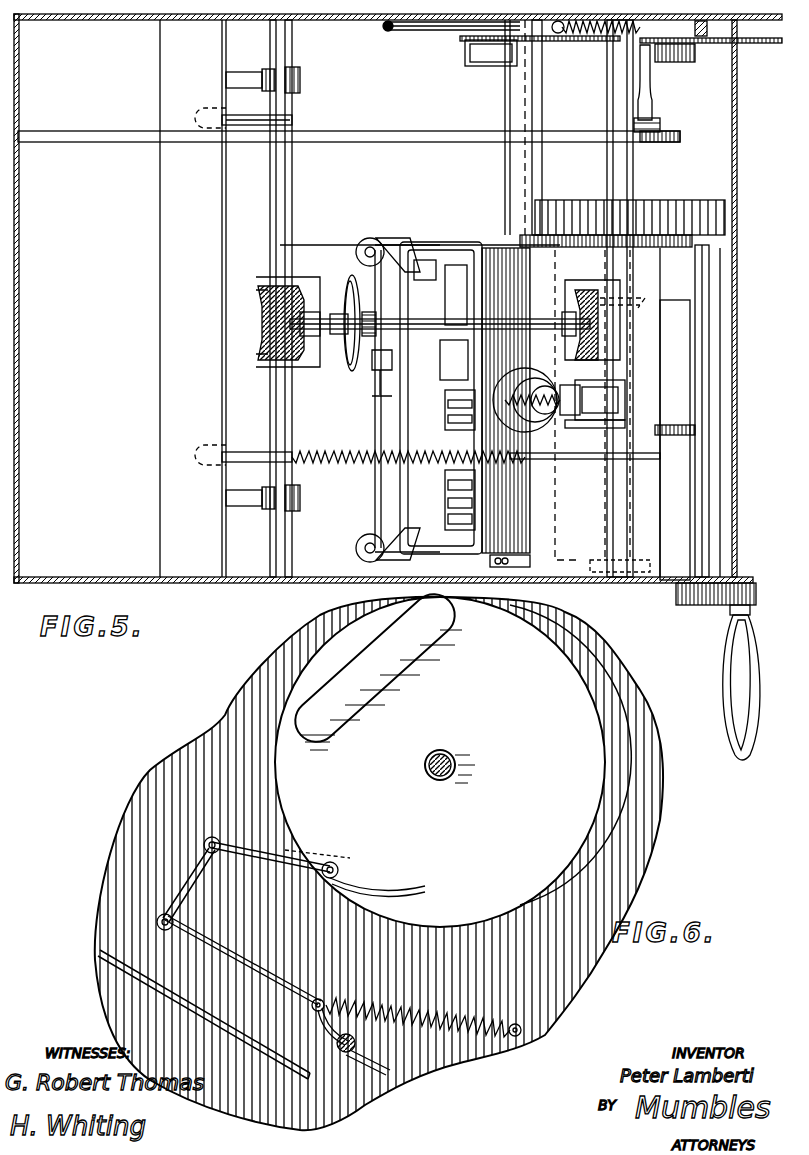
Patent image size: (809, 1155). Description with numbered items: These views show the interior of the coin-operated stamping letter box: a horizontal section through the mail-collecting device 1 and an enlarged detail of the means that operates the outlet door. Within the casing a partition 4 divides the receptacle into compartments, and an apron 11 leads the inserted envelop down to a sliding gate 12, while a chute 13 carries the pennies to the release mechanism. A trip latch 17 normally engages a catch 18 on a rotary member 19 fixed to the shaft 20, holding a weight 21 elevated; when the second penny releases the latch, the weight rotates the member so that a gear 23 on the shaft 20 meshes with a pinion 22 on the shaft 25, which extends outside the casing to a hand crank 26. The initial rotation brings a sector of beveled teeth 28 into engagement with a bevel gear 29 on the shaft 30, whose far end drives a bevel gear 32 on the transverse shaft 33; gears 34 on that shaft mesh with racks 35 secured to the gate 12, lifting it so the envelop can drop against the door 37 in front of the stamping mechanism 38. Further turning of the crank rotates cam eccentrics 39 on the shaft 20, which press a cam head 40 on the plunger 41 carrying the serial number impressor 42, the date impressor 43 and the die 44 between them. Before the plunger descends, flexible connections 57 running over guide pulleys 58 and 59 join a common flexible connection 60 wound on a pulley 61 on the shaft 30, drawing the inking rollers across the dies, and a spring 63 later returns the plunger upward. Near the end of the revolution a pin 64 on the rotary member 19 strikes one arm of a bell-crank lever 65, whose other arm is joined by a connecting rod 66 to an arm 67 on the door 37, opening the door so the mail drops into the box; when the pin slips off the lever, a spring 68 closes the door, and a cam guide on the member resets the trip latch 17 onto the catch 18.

In FIG. 5, the mail-collecting device 1 is at (766, 40).
In FIG. 5, the partition 4 is at (736, 246).
In FIG. 5, the apron 11 is at (161, 298).
In FIG. 5, the gate 12 is at (160, 340).
In FIG. 5, the chute 13 is at (378, 131).
In FIG. 5, the trip latch 17 is at (652, 110).
In FIG. 5, the catch 18 is at (640, 58).
In FIG. 6, the catch 18 is at (340, 872).
In FIG. 5, the rotary member 19 is at (752, 44).
In FIG. 6, the rotary member 19 is at (580, 792).
In FIG. 5, the shaft 20 is at (615, 160).
In FIG. 6, the shaft 20 is at (452, 758).
In FIG. 5, the weight 21 is at (488, 55).
In FIG. 6, the weight 21 is at (375, 667).
In FIG. 5, the pinion 22 is at (728, 208).
In FIG. 5, the gear 23 is at (652, 200).
In FIG. 5, the shaft 25 is at (710, 412).
In FIG. 5, the hand crank 26 is at (732, 616).
In FIG. 5, the sector of beveled teeth 28 is at (618, 290).
In FIG. 5, the bevel gear 29 is at (600, 336).
In FIG. 5, the shaft 30 is at (532, 320).
In FIG. 5, the bevel gear 32 is at (292, 290).
In FIG. 5, the transverse shaft 33 is at (270, 343).
In FIG. 5, the gear 34 is at (300, 76).
In FIG. 5, the rack 35 is at (244, 76).
In FIG. 5, the door 37 is at (520, 118).
In FIG. 6, the door 37 is at (372, 1082).
In FIG. 5, the stamping mechanism 38 is at (510, 510).
In FIG. 5, the cam eccentric 39 is at (668, 425).
In FIG. 5, the cam head 40 is at (590, 428).
In FIG. 5, the plunger 41 is at (565, 420).
In FIG. 5, the serial number impressor 42 is at (446, 292).
In FIG. 5, the date impressor 43 is at (445, 498).
In FIG. 5, the die 44 is at (459, 460).
In FIG. 5, the flexible connection 57 is at (420, 240).
In FIG. 5, the guide pulley 58 is at (378, 242).
In FIG. 5, the guide pulley 59 is at (380, 350).
In FIG. 5, the common flexible connection 60 is at (372, 372).
In FIG. 5, the pulley 61 is at (354, 283).
In FIG. 5, the spring 63 is at (545, 425).
In FIG. 6, the pin 64 is at (330, 860).
In FIG. 5, the bell-crank lever 65 is at (400, 32).
In FIG. 6, the bell-crank lever 65 is at (292, 858).
In FIG. 5, the connecting rod 66 is at (432, 36).
In FIG. 6, the connecting rod 66 is at (255, 972).
In FIG. 5, the arm 67 is at (556, 34).
In FIG. 6, the arm 67 is at (332, 1000).
In FIG. 5, the spring 68 is at (713, 30).
In FIG. 6, the spring 68 is at (495, 1035).